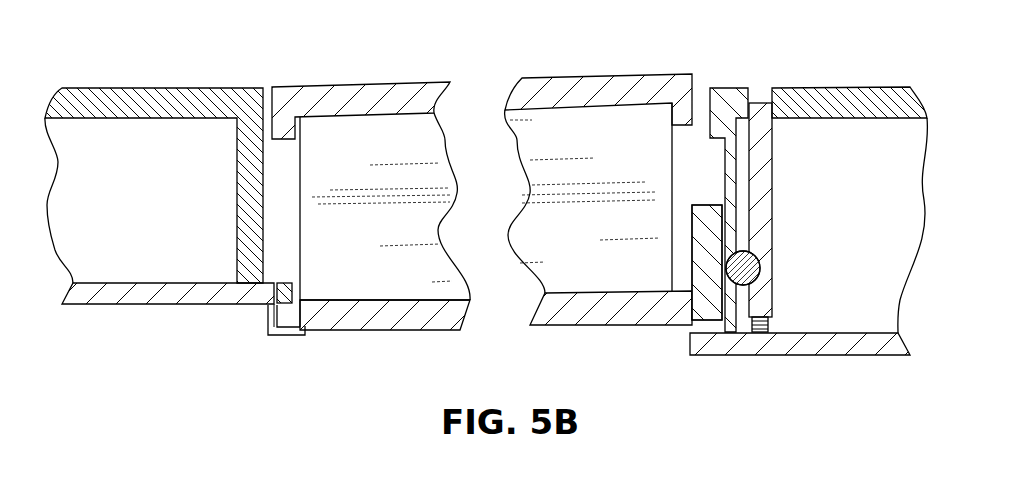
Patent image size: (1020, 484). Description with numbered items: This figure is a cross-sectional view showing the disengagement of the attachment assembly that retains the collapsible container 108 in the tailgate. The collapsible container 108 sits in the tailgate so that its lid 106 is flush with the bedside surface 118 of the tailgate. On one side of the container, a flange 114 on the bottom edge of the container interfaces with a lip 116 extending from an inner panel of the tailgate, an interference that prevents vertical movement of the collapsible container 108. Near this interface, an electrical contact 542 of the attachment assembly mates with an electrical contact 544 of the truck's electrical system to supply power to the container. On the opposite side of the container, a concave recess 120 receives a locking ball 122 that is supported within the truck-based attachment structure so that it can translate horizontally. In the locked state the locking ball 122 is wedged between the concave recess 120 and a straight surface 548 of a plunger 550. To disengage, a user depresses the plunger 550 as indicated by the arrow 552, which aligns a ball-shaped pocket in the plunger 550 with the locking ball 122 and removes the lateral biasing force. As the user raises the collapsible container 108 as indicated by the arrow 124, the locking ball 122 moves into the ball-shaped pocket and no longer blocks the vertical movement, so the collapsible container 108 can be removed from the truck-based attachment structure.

The lid 106 is at (389, 100).
The collapsible container 108 is at (553, 200).
The flange 114 is at (375, 320).
The lip 116 is at (266, 312).
The bedside surface 118 is at (161, 98).
The concave recess 120 is at (718, 250).
The locking ball 122 is at (746, 282).
The arrow 124 is at (926, 300).
The electrical contact 542 is at (290, 320).
The electrical contact 544 is at (288, 292).
The straight surface 548 is at (760, 274).
The plunger 550 is at (773, 156).
The arrow 552 is at (761, 86).